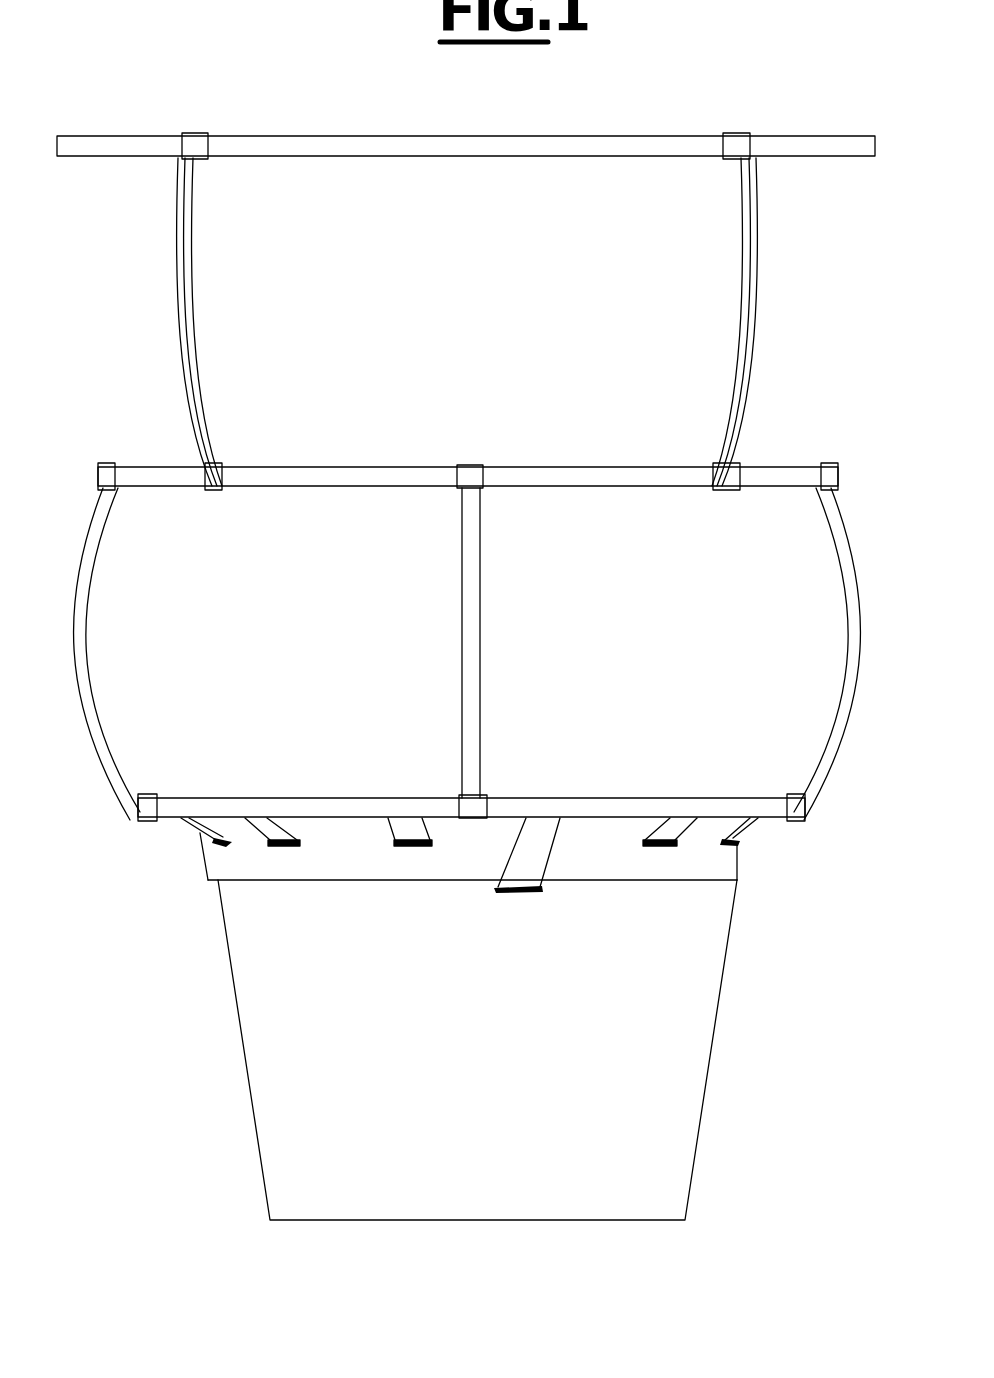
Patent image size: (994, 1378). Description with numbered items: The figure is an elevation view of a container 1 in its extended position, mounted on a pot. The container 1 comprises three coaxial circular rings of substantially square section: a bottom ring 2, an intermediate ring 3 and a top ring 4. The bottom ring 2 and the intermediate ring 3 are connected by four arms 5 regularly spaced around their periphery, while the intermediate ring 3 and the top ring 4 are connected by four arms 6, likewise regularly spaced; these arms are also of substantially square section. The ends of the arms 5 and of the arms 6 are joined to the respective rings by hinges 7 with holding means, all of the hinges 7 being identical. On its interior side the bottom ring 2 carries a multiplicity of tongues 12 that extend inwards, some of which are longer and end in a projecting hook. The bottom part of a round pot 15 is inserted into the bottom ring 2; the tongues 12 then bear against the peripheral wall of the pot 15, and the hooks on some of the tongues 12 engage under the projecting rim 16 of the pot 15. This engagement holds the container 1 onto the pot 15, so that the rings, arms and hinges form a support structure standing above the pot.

The container 1 is at (800, 388).
The bottom ring 2 is at (730, 805).
The intermediate ring 3 is at (147, 480).
The top ring 4 is at (313, 148).
The arms 5 is at (473, 622).
The arms 6 is at (190, 315).
The hinges 7 is at (754, 128).
The tongues 12 is at (283, 835).
The round pot 15 is at (675, 1049).
The projecting rim 16 is at (255, 865).